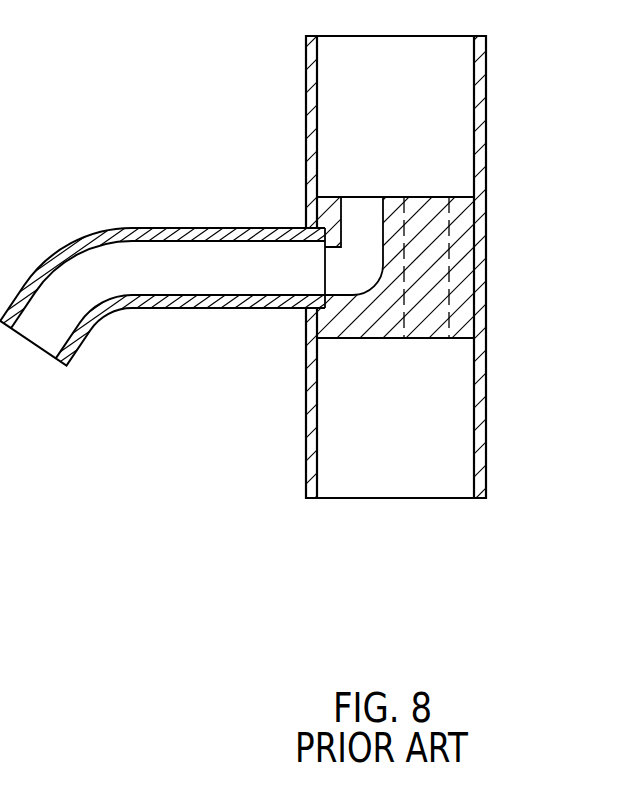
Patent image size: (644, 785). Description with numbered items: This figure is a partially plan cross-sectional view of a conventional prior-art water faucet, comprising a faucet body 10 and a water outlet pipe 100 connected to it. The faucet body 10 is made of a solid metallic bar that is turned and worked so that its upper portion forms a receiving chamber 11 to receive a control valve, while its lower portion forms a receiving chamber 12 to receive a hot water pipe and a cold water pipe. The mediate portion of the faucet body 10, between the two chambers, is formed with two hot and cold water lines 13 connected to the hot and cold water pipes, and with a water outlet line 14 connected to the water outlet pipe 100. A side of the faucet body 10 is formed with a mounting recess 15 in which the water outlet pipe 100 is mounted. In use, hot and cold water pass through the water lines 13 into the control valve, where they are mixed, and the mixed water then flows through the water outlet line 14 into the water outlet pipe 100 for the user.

The water outlet pipe 100 is at (119, 214).
The faucet body 10 is at (296, 405).
The receiving chamber 11 is at (440, 118).
The receiving chamber 12 is at (383, 448).
The water lines 13 is at (440, 307).
The water outlet line 14 is at (358, 227).
The mounting recess 15 is at (317, 312).